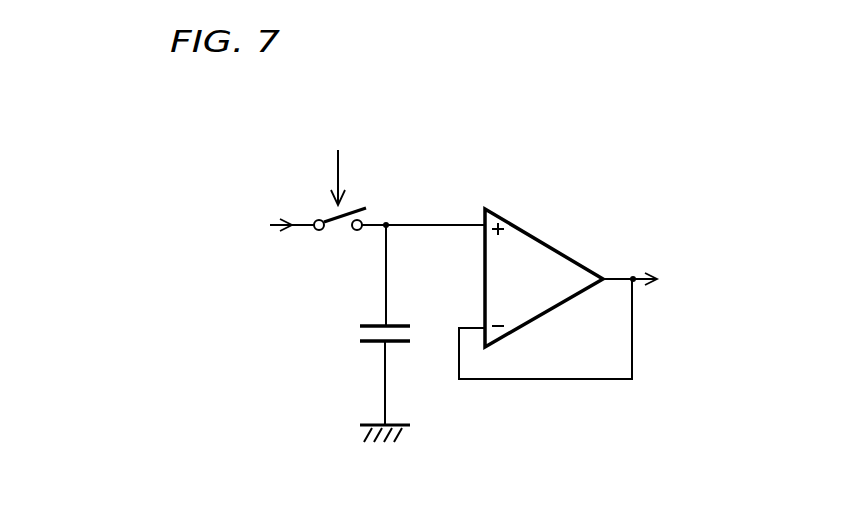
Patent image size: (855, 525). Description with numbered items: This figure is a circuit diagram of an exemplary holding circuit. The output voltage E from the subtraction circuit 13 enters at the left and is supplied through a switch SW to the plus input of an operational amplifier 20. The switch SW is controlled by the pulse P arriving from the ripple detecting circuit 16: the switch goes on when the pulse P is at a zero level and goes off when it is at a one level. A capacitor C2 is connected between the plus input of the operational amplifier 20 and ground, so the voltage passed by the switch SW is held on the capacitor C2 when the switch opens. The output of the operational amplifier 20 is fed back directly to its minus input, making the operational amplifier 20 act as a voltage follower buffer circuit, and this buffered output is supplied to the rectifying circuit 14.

The subtraction circuit 13 is at (166, 225).
The switch SW is at (340, 229).
The ripple detecting circuit 16 is at (336, 153).
The pulse P is at (338, 173).
The capacitor C2 is at (358, 333).
The operational amplifier 20 is at (555, 245).
The rectifying circuit 14 is at (702, 279).